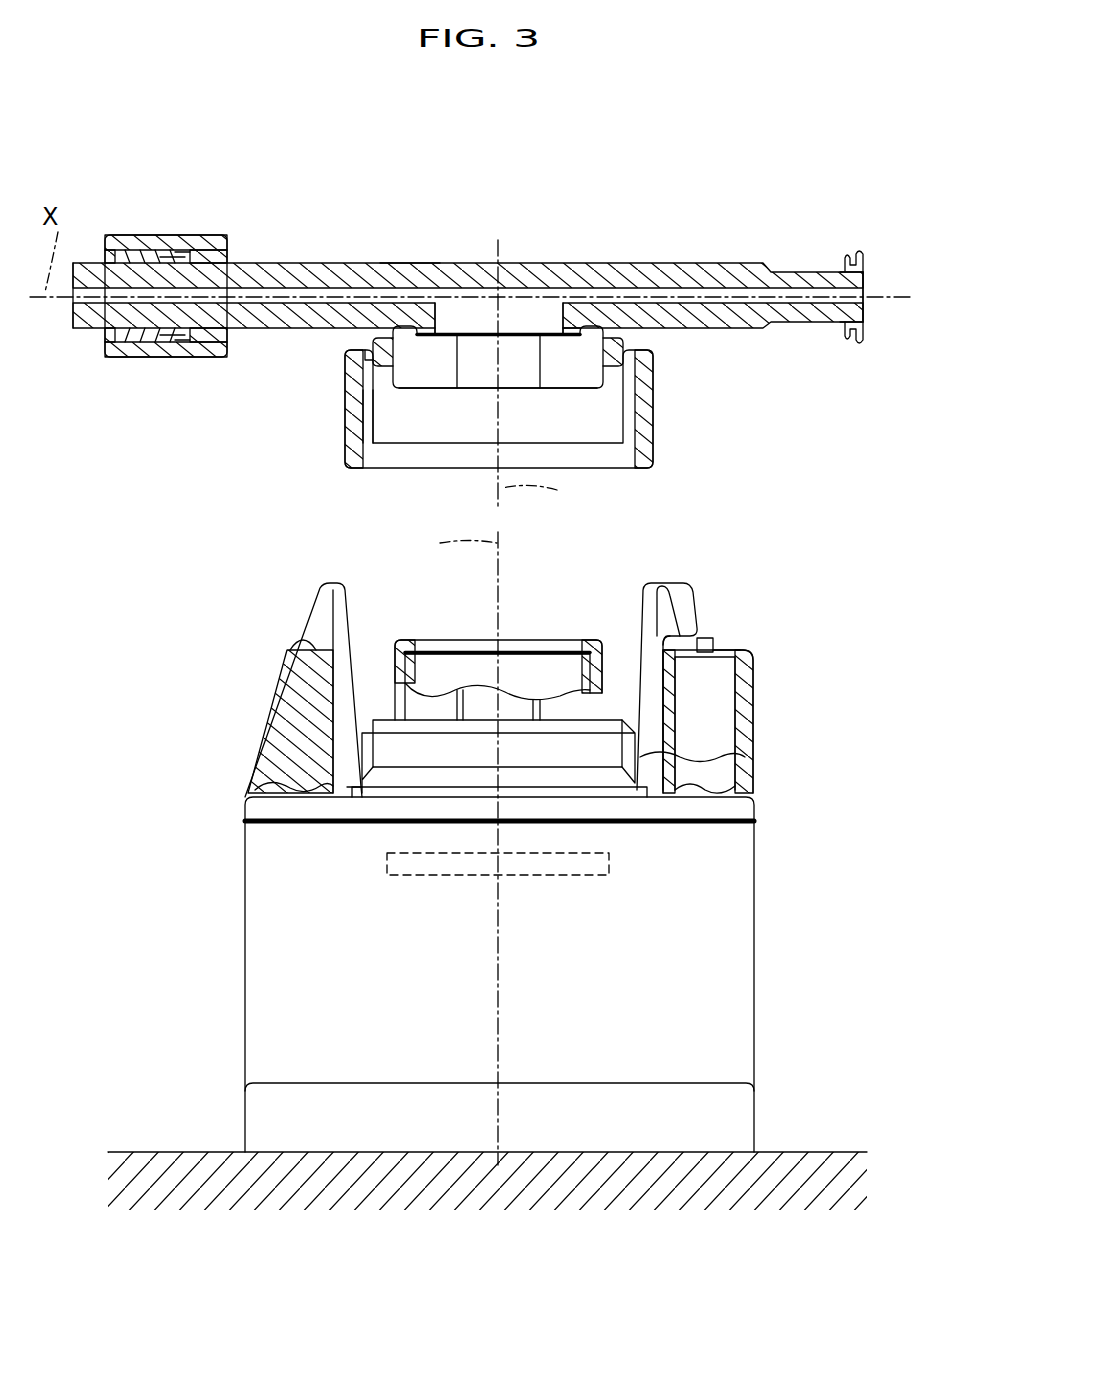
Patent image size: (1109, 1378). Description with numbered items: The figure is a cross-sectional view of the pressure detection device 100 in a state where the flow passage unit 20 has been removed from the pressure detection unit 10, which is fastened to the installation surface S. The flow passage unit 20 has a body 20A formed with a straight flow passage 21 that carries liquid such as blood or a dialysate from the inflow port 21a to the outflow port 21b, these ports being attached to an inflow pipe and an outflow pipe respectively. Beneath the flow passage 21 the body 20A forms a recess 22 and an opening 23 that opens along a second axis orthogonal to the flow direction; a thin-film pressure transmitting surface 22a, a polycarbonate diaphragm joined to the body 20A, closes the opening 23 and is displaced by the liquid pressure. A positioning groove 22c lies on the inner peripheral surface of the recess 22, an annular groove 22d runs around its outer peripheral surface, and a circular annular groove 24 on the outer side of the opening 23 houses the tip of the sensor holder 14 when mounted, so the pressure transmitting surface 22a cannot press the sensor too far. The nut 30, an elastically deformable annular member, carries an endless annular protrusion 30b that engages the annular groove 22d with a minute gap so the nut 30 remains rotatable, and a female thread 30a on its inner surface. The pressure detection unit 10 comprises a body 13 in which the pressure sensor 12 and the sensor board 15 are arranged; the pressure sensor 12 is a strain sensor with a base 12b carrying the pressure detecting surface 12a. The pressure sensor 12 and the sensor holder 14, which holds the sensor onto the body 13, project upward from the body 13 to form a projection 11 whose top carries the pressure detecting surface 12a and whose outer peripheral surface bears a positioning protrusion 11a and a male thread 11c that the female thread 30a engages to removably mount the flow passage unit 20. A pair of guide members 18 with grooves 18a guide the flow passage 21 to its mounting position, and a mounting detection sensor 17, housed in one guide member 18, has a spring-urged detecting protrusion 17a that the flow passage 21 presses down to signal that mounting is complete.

The pressure detection device 100 is at (806, 181).
The flow passage unit 20 is at (678, 256).
The body 20A is at (409, 273).
The flow passage 21 is at (291, 295).
The inflow port 21a is at (855, 345).
The outflow port 21b is at (82, 332).
The recess 22 is at (567, 374).
The pressure transmitting surface 22a is at (521, 337).
The positioning groove 22c is at (475, 391).
The annular groove 22d is at (650, 362).
The opening 23 is at (537, 310).
The circular annular groove 24 is at (582, 330).
The nut 30 is at (655, 430).
The female thread 30a is at (374, 418).
The annular protrusion 30b is at (355, 358).
The pressure detection unit 10 is at (797, 584).
The projection 11 is at (582, 628).
The positioning protrusion 11a is at (468, 690).
The male thread 11c is at (755, 757).
The pressure sensor 12 is at (556, 700).
The pressure detecting surface 12a is at (543, 650).
The base 12b is at (437, 651).
The body 13 is at (755, 908).
The sensor holder 14 is at (398, 640).
The sensor board 15 is at (612, 863).
The mounting detection sensor 17 is at (755, 684).
The detecting protrusion 17a is at (720, 648).
The guide member 18 is at (312, 593).
The groove 18a is at (300, 637).
The installation surface S is at (185, 1152).